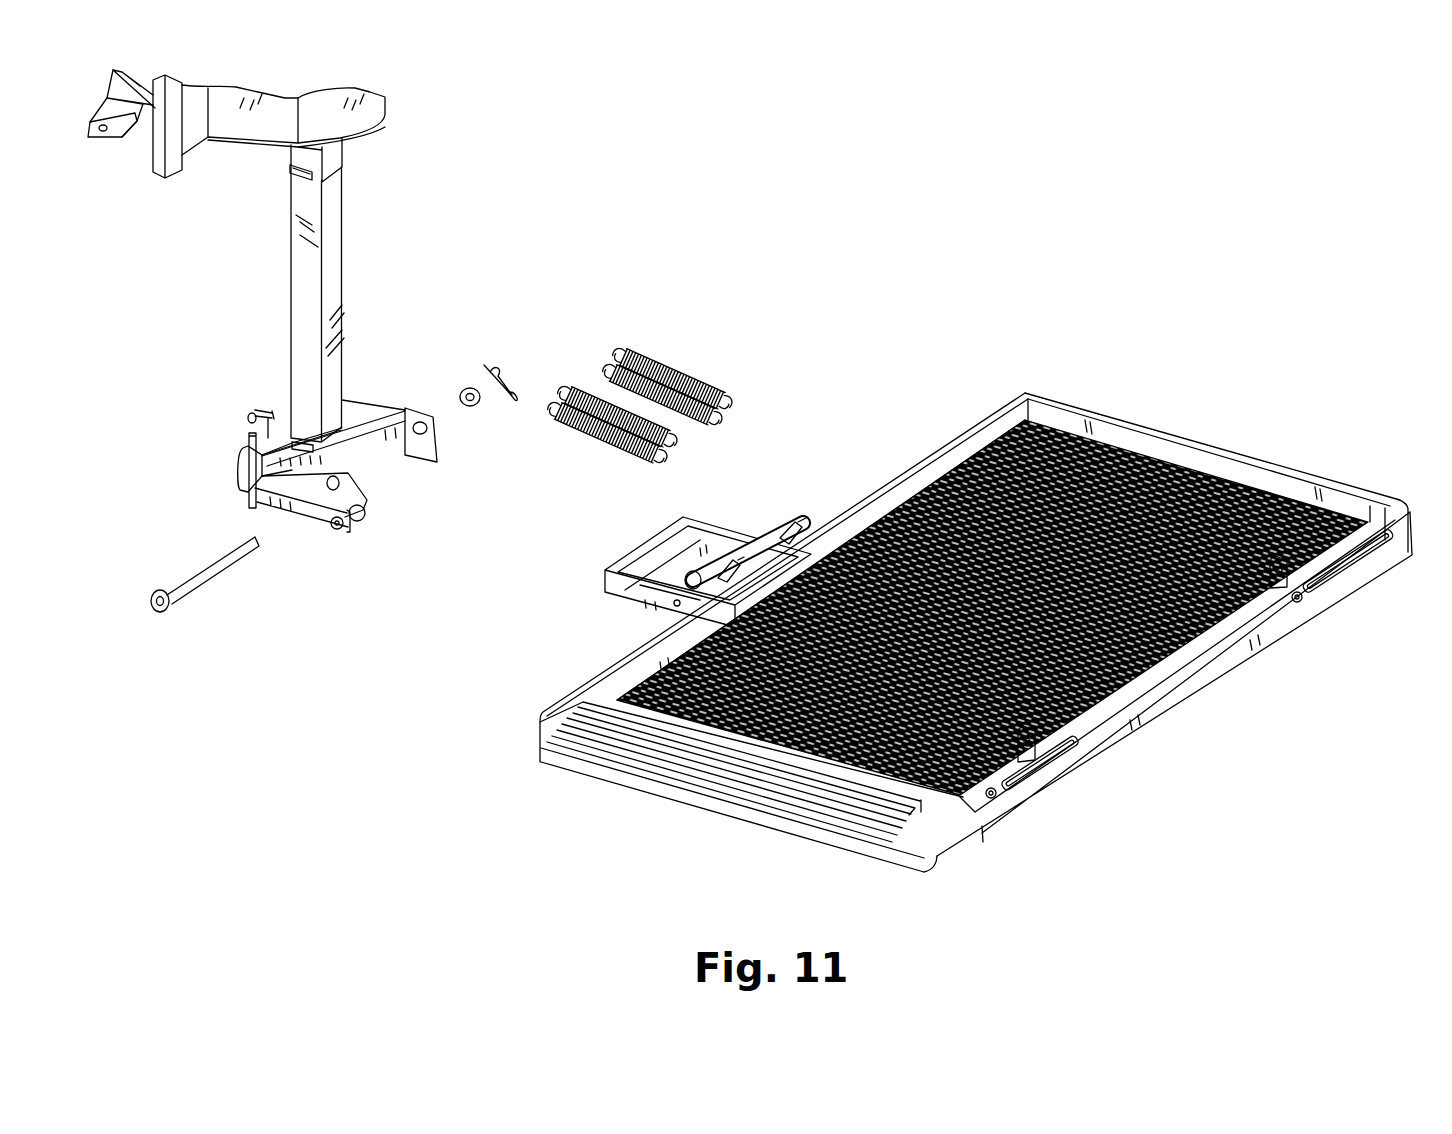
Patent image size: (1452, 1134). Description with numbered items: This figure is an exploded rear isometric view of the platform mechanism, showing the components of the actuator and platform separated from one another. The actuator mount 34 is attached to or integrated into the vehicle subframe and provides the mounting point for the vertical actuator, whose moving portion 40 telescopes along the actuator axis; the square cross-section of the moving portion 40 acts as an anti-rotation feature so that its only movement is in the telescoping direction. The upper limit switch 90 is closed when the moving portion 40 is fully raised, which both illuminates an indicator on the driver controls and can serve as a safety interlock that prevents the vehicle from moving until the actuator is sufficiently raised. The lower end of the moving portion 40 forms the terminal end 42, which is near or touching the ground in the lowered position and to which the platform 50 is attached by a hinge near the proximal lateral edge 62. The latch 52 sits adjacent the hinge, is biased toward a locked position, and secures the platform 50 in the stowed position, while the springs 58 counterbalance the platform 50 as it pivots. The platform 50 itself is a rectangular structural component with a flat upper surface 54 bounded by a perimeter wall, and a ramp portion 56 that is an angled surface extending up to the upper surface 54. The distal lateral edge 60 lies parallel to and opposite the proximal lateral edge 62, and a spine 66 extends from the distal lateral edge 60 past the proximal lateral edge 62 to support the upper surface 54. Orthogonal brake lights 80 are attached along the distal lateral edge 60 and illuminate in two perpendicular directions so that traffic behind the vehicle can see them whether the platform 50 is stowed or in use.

The actuator mount 34 is at (381, 107).
The moving portion 40 is at (300, 305).
The terminal end 42 is at (238, 473).
The platform 50 is at (994, 582).
The latch 52 is at (298, 540).
The upper surface 54 is at (1213, 487).
The ramp portion 56 is at (733, 785).
The springs 58 is at (688, 377).
The distal lateral edge 60 is at (1168, 705).
The proximal lateral edge 62 is at (923, 493).
The spine 66 is at (590, 602).
The orthogonal brake lights 80 is at (1355, 572).
The upper limit switch 90 is at (284, 165).